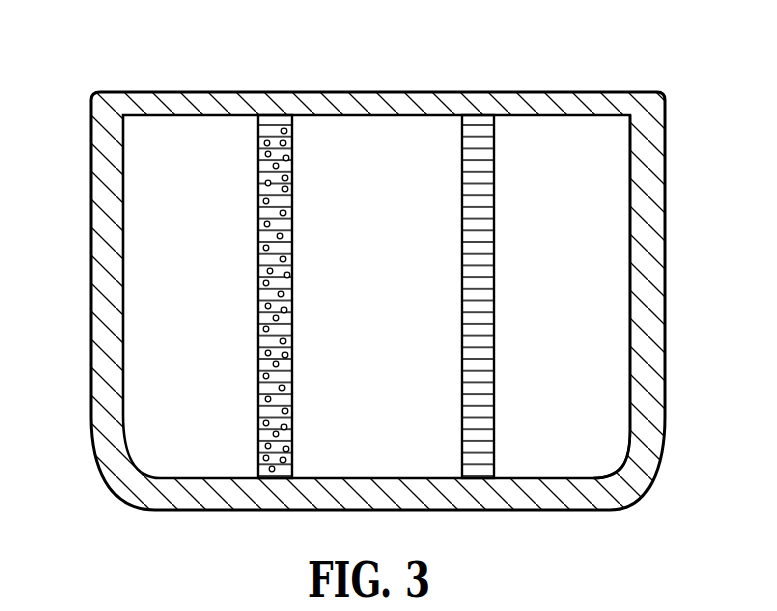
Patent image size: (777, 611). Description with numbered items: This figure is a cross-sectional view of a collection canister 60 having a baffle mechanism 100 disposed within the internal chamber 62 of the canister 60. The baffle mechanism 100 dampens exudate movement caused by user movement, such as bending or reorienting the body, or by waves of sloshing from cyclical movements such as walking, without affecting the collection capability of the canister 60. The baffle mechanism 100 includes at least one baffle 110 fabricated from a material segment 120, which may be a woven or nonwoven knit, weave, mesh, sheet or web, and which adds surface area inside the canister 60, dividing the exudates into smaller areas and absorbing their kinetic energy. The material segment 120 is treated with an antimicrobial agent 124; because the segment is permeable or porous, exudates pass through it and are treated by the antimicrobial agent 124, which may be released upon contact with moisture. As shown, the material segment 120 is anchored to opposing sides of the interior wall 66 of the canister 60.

The collection canister 60 is at (91, 256).
The internal chamber 62 is at (143, 210).
The interior wall 66 is at (630, 192).
The baffle mechanism 100 is at (300, 245).
The baffle 110 is at (270, 115).
The material segment 120 is at (258, 162).
The antimicrobial agent 124 is at (258, 357).